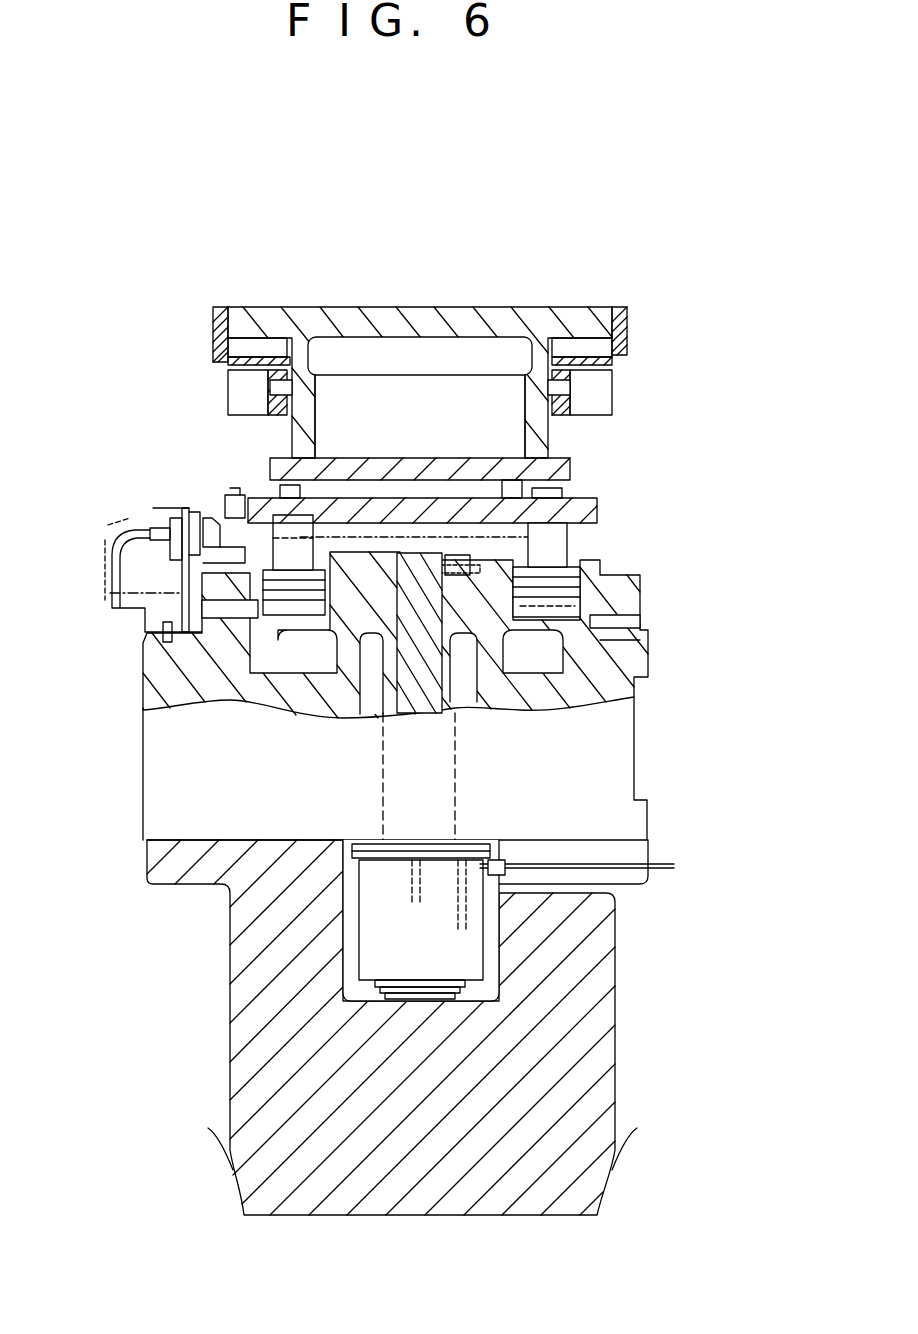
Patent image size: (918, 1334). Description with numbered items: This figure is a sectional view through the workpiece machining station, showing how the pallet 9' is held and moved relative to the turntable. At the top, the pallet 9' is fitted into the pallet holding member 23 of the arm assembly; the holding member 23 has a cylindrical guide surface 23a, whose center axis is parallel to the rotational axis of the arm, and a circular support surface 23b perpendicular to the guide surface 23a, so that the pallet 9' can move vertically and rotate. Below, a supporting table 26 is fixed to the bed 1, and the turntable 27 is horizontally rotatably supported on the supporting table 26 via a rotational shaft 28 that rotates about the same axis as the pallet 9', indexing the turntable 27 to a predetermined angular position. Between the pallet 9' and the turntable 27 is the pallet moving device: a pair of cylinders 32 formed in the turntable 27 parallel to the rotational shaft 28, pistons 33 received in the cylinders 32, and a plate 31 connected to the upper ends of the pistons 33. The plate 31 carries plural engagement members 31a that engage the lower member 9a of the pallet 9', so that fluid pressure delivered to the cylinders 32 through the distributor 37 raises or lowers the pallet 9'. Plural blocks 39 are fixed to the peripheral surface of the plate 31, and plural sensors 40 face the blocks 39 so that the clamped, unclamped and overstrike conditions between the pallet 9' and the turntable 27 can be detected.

The bed 1 is at (240, 945).
The pallet 9' is at (420, 320).
The lower member 9a is at (563, 470).
The pallet holding member 23 is at (567, 402).
The cylindrical guide surface 23a is at (298, 367).
The circular support surface 23b is at (258, 348).
The supporting table 26 is at (150, 818).
The turntable 27 is at (620, 602).
The rotational shaft 28 is at (455, 693).
The plate 31 is at (600, 510).
The engagement member 31a is at (507, 468).
The cylinder 32 is at (620, 652).
The piston 33 is at (567, 527).
The distributor 37 is at (470, 960).
The block 39 is at (205, 518).
The sensor 40 is at (153, 510).